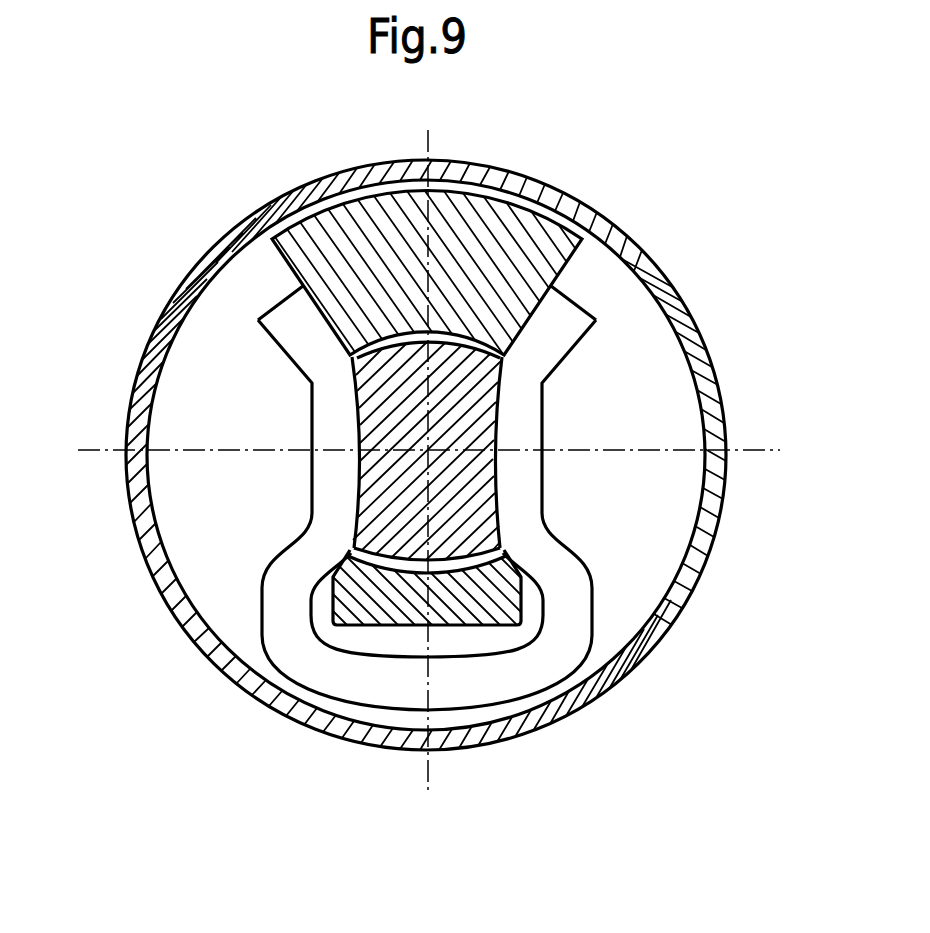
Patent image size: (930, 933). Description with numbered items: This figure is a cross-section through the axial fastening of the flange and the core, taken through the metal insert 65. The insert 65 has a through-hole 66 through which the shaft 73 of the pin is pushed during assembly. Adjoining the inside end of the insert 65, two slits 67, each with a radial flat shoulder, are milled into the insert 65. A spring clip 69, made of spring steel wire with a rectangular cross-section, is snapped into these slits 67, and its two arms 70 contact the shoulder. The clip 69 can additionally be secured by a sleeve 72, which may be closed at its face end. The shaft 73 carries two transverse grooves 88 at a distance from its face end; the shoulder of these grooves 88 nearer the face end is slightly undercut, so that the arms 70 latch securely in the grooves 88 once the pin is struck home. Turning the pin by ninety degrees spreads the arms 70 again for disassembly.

The metal insert 65 is at (320, 248).
The through-hole 66 is at (393, 563).
The slits 67 is at (192, 352).
The spring clip 69 is at (395, 682).
The arms 70 is at (327, 430).
The sleeve 72 is at (642, 258).
The shaft 73 is at (450, 417).
The transverse grooves 88 is at (502, 478).